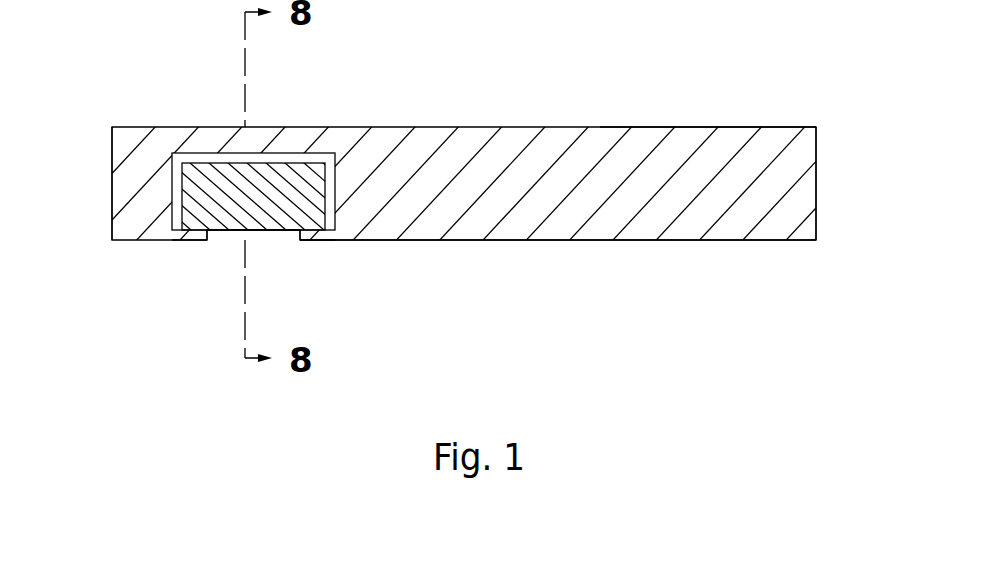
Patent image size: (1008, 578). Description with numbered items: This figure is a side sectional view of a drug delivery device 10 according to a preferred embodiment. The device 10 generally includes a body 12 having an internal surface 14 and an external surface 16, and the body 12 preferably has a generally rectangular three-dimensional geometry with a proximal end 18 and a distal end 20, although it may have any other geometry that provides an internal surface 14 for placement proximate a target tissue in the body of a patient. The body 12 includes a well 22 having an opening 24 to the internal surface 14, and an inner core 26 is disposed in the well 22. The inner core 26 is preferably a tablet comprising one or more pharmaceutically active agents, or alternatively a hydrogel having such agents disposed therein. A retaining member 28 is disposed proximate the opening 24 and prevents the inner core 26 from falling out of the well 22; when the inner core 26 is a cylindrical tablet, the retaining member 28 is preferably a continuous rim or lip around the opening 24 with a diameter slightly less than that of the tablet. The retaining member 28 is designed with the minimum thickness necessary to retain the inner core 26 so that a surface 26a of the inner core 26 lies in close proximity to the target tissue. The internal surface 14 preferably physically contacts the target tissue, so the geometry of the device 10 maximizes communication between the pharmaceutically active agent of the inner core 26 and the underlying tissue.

The drug delivery device 10 is at (641, 47).
The body 12 is at (626, 202).
The internal surface 14 is at (460, 241).
The external surface 16 is at (735, 126).
The proximal end 18 is at (817, 193).
The distal end 20 is at (113, 187).
The well 22 is at (199, 160).
The opening 24 is at (269, 252).
The inner core 26 is at (292, 173).
The surface of inner core 26a is at (229, 231).
The retaining member 28 is at (193, 243).